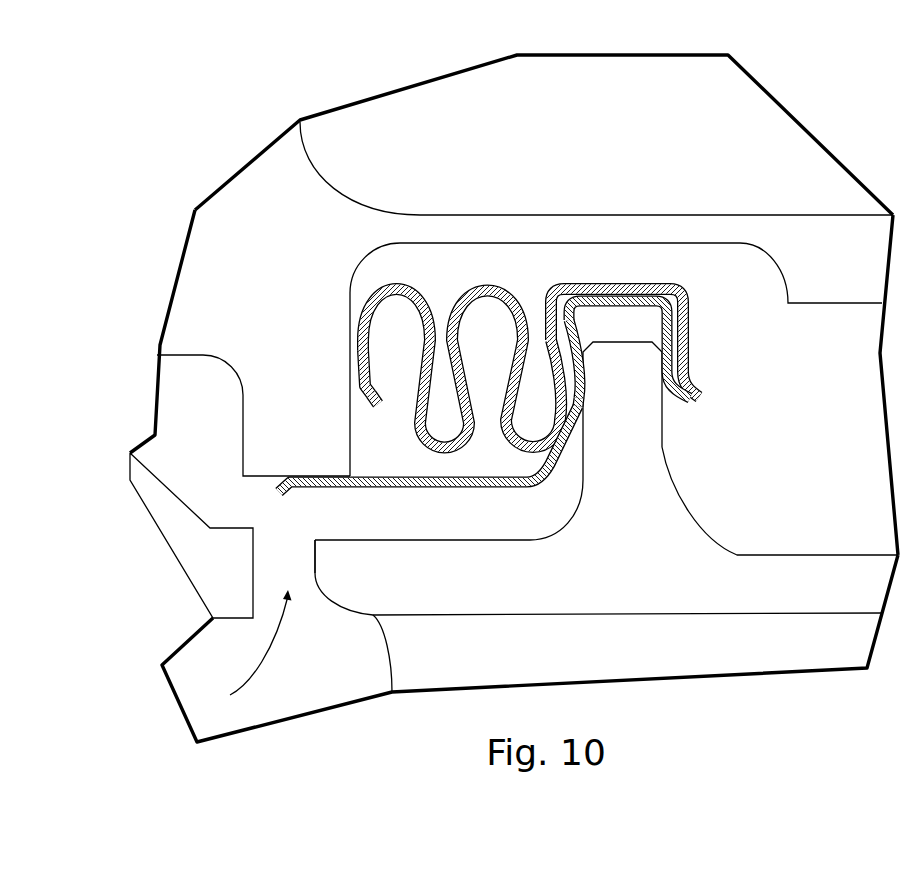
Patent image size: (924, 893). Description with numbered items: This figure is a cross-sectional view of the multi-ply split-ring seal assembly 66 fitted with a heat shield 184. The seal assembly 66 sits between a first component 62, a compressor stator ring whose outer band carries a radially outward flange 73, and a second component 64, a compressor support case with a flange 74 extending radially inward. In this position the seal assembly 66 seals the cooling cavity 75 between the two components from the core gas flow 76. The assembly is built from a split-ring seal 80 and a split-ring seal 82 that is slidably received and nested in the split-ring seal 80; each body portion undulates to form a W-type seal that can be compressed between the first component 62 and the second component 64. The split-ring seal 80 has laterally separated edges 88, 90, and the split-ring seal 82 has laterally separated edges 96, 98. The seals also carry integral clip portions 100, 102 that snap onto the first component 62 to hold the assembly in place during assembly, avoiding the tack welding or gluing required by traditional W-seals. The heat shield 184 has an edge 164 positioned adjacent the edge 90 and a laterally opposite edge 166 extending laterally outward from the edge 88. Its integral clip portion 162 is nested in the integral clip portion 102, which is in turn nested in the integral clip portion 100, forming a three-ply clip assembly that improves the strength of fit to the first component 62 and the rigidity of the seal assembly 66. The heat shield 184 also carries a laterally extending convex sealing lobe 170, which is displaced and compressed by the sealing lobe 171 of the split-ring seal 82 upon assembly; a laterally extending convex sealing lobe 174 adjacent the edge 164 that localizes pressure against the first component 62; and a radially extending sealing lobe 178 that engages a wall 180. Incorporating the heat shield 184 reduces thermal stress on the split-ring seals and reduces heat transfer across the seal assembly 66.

The first component 62 is at (640, 586).
The second component 64 is at (260, 300).
The seal assembly 66 is at (628, 138).
The flange 73 is at (648, 370).
The flange 74 is at (264, 393).
The cooling cavity 75 is at (505, 280).
The core gas flow 76 is at (260, 667).
The split-ring seal 80 is at (452, 302).
The split-ring seal 82 is at (500, 398).
The edge 88 is at (375, 404).
The edge 90 is at (697, 392).
The edge 96 is at (382, 406).
The edge 98 is at (702, 402).
The integral clip portion 100 is at (622, 278).
The integral clip portion 102 is at (669, 285).
The integral clip portion 162 is at (633, 311).
The edge 164 is at (681, 403).
The edge 166 is at (280, 488).
The sealing lobe 170 is at (590, 392).
The sealing lobe 171 is at (584, 408).
The sealing lobe 174 is at (653, 384).
The sealing lobe 178 is at (296, 477).
The wall 180 is at (245, 477).
The heat shield 184 is at (462, 497).